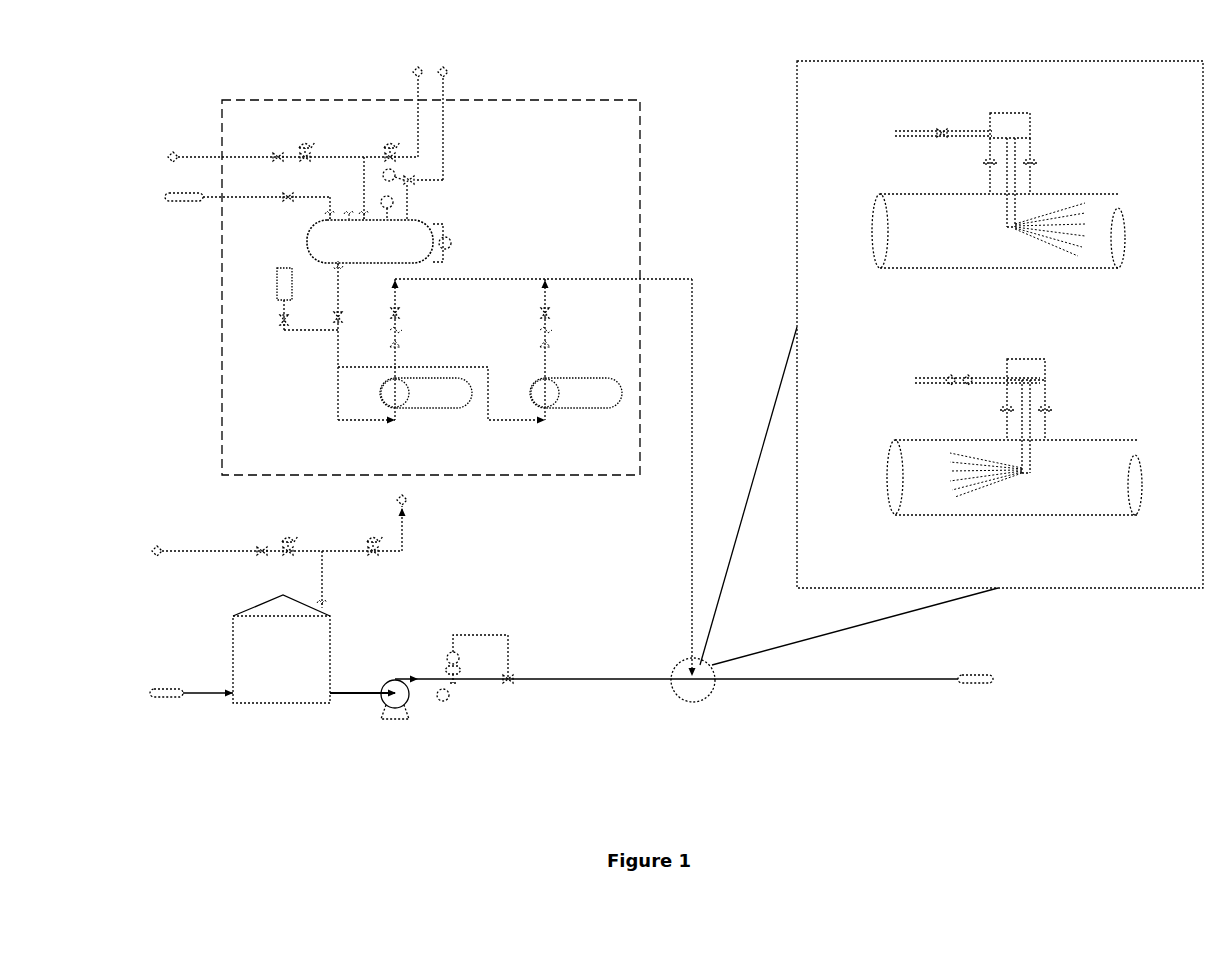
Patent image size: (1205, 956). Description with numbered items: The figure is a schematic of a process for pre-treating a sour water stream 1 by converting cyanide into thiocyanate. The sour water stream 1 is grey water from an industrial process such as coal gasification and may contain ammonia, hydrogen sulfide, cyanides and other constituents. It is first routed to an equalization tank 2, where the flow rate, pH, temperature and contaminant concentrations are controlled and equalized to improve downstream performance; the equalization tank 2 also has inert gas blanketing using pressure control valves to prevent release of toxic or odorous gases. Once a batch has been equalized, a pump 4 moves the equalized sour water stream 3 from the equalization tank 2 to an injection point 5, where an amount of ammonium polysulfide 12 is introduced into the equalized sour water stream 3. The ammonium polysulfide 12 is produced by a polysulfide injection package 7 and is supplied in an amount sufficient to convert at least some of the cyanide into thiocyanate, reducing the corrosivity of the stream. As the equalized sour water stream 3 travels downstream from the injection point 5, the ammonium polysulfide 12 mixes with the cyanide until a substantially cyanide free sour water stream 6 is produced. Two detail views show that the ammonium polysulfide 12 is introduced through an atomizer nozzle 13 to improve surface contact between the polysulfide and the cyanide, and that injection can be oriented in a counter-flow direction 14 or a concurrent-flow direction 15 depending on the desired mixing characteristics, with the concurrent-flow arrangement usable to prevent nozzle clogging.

The sour water stream 1 is at (174, 693).
The equalization tank 2 is at (286, 661).
The equalized sour water stream 3 is at (905, 230).
The pump 4 is at (403, 761).
The injection point 5 is at (694, 729).
The cyanide free sour water stream 6 is at (990, 679).
The polysulfide injection package 7 is at (553, 162).
The ammonium polysulfide stream 12 is at (888, 133).
The atomizer nozzle 13 is at (1017, 317).
The counter-flow direction 14 is at (1122, 384).
The concurrent-flow direction 15 is at (1113, 136).